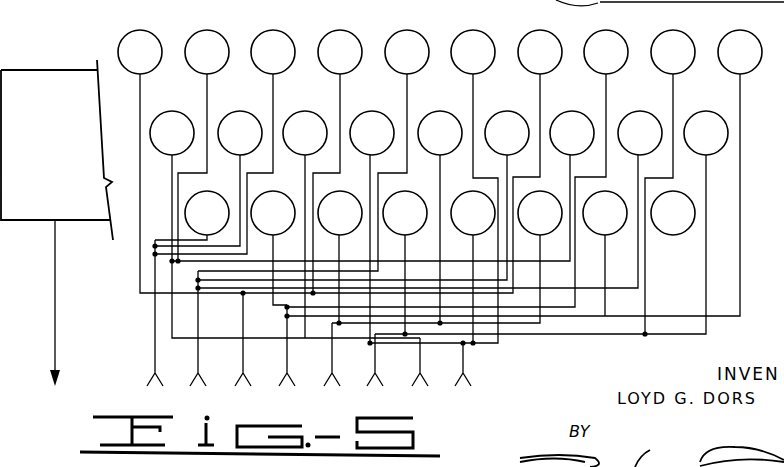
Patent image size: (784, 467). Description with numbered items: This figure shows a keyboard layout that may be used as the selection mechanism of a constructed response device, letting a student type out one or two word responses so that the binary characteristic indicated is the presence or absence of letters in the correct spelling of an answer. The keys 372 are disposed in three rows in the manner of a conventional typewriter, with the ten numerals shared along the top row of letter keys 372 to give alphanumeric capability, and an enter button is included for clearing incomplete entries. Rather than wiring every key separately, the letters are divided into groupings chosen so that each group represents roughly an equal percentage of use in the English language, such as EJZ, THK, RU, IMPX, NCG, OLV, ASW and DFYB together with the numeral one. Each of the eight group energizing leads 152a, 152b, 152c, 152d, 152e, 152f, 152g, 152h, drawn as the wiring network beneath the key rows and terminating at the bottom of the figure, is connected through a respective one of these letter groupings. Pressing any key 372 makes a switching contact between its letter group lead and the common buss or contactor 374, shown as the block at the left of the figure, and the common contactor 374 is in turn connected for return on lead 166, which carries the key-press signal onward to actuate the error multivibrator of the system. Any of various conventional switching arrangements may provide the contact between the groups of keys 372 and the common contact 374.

The keys 372 is at (281, 32).
The common buss or contactor 374 is at (81, 97).
The lead 166 is at (58, 314).
The group energizing lead 152a is at (175, 343).
The group energizing lead 152b is at (218, 343).
The group energizing lead 152c is at (263, 343).
The group energizing lead 152d is at (307, 343).
The group energizing lead 152e is at (352, 343).
The group energizing lead 152f is at (395, 343).
The group energizing lead 152g is at (440, 343).
The group energizing lead 152h is at (483, 343).